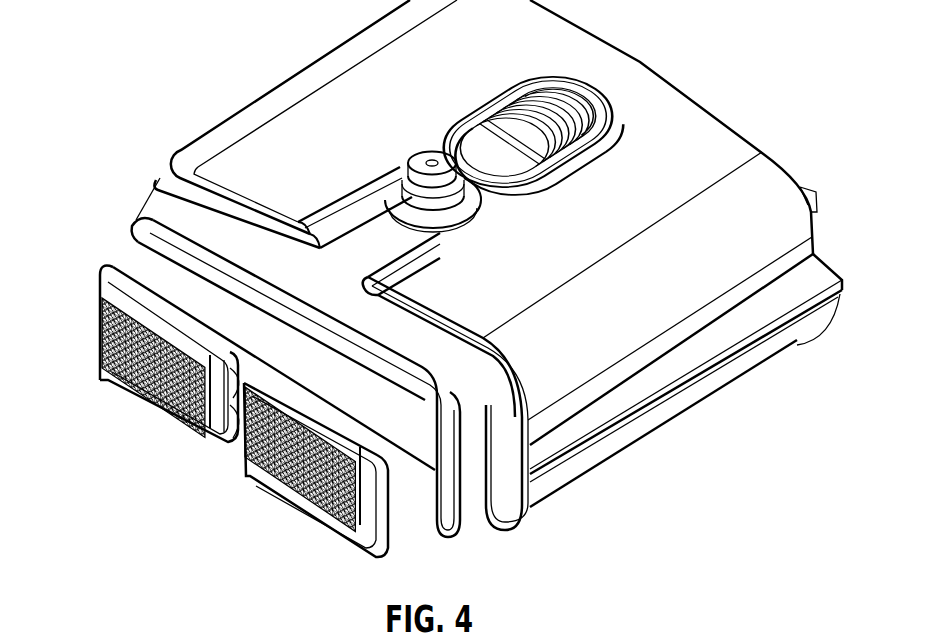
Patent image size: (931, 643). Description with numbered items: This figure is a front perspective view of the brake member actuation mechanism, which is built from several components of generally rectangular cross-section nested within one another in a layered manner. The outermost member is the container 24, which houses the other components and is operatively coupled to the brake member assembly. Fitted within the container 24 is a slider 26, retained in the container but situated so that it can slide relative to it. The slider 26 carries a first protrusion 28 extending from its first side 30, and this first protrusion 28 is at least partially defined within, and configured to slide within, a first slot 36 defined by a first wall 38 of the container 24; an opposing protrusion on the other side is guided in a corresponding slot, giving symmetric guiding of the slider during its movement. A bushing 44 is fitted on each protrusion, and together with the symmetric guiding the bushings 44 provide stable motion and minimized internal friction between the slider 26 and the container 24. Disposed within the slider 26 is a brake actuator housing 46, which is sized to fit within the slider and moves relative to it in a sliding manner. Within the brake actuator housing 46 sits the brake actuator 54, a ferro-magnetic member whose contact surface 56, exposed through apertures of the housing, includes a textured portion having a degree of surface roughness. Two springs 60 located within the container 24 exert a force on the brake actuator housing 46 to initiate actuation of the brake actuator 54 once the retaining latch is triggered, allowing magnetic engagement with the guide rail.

The container 24 is at (278, 80).
The slider 26 is at (150, 206).
The first protrusion 28 is at (432, 160).
The first side 30 is at (204, 218).
The first slot 36 is at (370, 238).
The first wall 38 is at (389, 53).
The bushing 44 is at (463, 207).
The brake actuator housing 46 is at (113, 256).
The brake actuator 54 is at (160, 412).
The contact surface 56 is at (116, 381).
The springs 60 is at (549, 118).